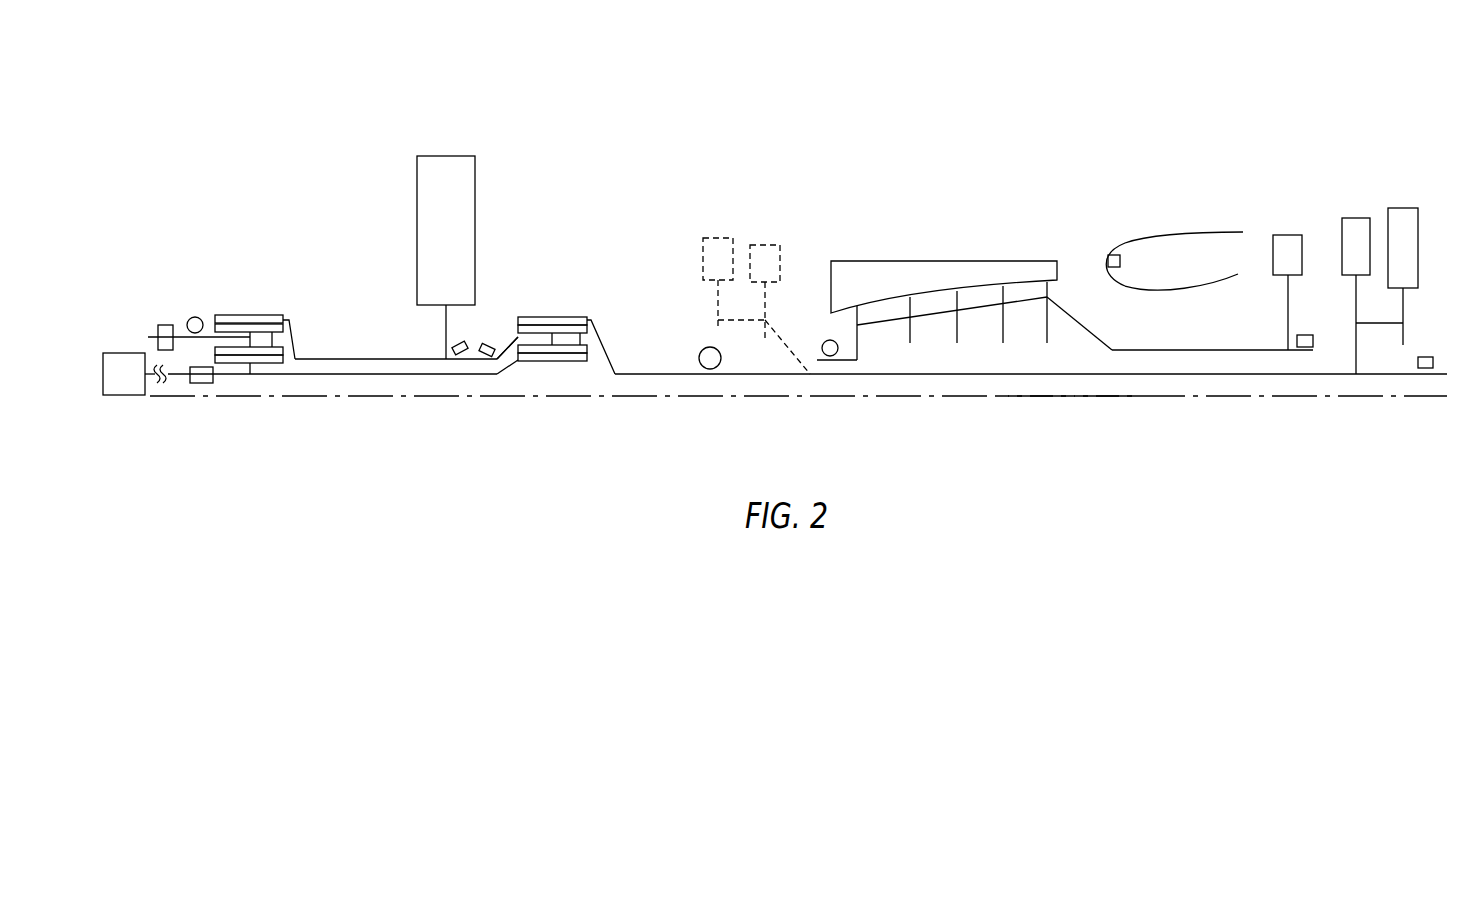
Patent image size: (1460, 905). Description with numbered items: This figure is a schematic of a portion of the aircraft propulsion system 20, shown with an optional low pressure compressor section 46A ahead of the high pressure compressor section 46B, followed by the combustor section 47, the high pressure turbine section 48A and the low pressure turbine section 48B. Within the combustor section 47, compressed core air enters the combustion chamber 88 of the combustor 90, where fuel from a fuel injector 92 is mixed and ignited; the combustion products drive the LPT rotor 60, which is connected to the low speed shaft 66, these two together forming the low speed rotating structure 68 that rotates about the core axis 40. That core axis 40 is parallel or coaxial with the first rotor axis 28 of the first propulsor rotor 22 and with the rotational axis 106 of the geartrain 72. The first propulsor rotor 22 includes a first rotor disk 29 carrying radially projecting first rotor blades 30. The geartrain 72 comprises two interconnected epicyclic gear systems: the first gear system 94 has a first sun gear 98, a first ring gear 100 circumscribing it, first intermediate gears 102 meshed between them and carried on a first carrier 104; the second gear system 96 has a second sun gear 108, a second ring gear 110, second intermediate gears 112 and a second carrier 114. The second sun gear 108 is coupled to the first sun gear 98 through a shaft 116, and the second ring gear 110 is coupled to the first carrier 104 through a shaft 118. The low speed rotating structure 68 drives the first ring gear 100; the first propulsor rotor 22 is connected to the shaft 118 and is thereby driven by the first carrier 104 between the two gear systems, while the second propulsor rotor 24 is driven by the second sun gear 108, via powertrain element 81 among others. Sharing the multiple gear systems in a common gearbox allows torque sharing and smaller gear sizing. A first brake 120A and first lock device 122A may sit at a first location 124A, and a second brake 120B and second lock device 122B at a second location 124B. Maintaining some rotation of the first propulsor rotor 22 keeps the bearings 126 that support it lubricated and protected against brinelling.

The aircraft propulsion system 20 is at (201, 110).
The first propulsor rotor 22 is at (451, 213).
The second propulsor rotor 24 is at (135, 386).
The first rotor axis 28 is at (798, 431).
The first rotor disk 29 is at (446, 330).
The first rotor blades 30 is at (417, 222).
The core axis 40 is at (798, 431).
The low pressure compressor section 46A is at (775, 224).
The high pressure compressor section 46B is at (946, 236).
The combustor section 47 is at (1158, 217).
The high pressure turbine section 48A is at (1282, 213).
The low pressure turbine section 48B is at (1376, 193).
The LPT rotor 60 is at (1424, 322).
The low speed shaft 66 is at (1137, 374).
The low speed rotating structure 68 is at (1069, 399).
The geartrain 72 is at (331, 414).
The powertrain element 81 is at (235, 424).
The combustion chamber 88 is at (1200, 272).
The combustor 90 is at (1190, 232).
The fuel injector 92 is at (1122, 248).
The first gear system 94 is at (591, 333).
The second gear system 96 is at (281, 321).
The first sun gear 98 is at (558, 361).
The first ring gear 100 is at (576, 317).
The first intermediate gears 102 is at (585, 334).
The first carrier 104 is at (518, 338).
The rotational axis 106 is at (798, 431).
The second sun gear 108 is at (272, 363).
The second ring gear 110 is at (269, 315).
The second intermediate gears 112 is at (288, 326).
The second carrier 114 is at (209, 337).
The shaft 116 is at (397, 374).
The shaft 118 is at (370, 359).
The first brake 120A is at (165, 283).
The first lock device 122A is at (165, 283).
The first location 124A is at (165, 325).
The second brake 120B is at (235, 424).
The second lock device 122B is at (235, 424).
The second location 124B is at (203, 384).
The bearings 126 is at (487, 357).